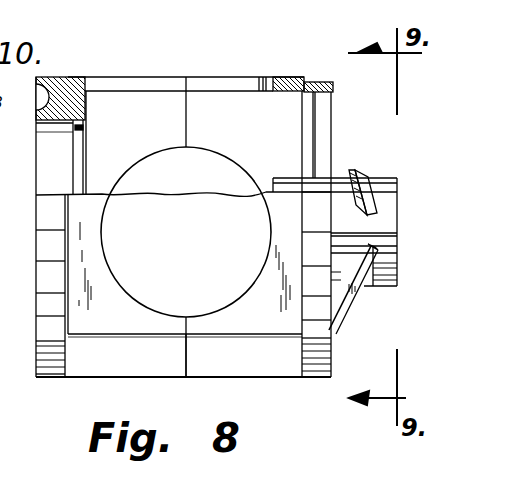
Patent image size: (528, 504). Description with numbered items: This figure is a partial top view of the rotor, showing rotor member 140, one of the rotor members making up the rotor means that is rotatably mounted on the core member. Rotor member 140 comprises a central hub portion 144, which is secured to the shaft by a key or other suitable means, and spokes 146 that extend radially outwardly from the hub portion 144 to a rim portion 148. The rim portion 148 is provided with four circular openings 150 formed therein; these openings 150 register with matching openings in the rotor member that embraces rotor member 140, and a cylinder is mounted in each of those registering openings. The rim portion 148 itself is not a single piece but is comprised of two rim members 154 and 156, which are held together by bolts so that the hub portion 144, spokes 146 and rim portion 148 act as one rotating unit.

The rotor member 140 is at (298, 68).
The rim portion 148 is at (324, 83).
The circular opening 150 is at (130, 82).
The hub portion 144 is at (377, 178).
The spoke 146 is at (348, 296).
The rim member 154 is at (248, 368).
The rim member 156 is at (118, 368).